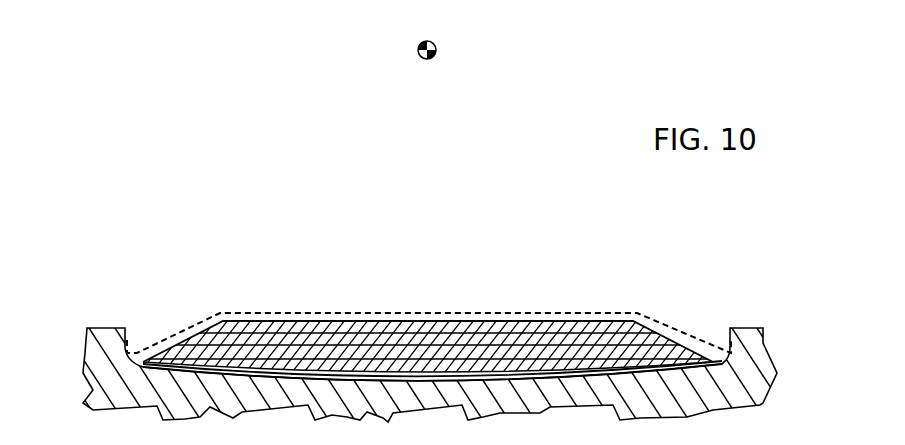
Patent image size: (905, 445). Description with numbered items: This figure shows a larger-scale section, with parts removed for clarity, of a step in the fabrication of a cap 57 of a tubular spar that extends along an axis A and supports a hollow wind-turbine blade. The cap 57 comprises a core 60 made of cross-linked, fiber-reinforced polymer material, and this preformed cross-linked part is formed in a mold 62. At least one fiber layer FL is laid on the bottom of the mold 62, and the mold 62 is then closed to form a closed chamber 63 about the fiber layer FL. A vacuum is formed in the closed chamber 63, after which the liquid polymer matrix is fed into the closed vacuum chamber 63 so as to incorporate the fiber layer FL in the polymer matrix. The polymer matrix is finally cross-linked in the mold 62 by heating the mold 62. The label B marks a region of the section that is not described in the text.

The cap 57 is at (314, 289).
The core 60 is at (460, 342).
The mold 62 is at (400, 390).
The closed chamber 63 is at (628, 316).
The fiber layer FL is at (193, 355).
The boundary B is at (523, 311).
The axis A is at (437, 55).